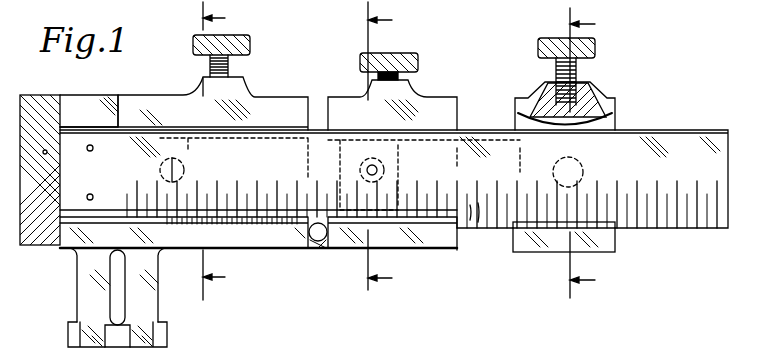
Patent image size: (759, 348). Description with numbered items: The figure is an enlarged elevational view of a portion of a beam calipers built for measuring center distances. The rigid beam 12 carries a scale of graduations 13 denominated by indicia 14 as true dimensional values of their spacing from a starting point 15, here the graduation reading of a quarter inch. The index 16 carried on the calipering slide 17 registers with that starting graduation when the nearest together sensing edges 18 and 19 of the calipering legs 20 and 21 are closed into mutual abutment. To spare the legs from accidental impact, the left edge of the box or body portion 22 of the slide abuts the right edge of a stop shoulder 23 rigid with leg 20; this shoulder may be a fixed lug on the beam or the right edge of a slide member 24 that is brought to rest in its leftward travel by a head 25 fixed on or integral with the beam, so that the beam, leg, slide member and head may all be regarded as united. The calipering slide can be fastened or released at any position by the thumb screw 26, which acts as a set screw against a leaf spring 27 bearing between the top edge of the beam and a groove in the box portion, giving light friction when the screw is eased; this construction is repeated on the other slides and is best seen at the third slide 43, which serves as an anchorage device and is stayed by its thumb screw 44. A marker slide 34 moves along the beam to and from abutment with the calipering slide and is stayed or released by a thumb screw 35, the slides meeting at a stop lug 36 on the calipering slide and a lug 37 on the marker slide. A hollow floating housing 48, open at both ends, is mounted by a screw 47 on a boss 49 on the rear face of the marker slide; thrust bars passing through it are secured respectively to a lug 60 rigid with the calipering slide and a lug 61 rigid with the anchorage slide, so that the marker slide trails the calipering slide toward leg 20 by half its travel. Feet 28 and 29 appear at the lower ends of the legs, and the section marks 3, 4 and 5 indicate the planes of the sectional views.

The beam 12 is at (672, 140).
The scale of graduations 13 is at (478, 226).
The indicia 14 is at (310, 160).
The starting point 15 is at (176, 160).
The index 16 is at (175, 249).
The calipering slide 17 is at (280, 255).
The sensing edge 18 is at (105, 328).
The sensing edge 19 is at (128, 328).
The calipering leg 20 is at (75, 288).
The calipering leg 21 is at (160, 288).
The box or body portion 22 is at (245, 262).
The stop shoulder 23 is at (104, 204).
The slide member 24 is at (89, 111).
The head 25 is at (38, 247).
The thumb screw 26 is at (250, 47).
The leaf spring 27 is at (615, 124).
The foot 28 is at (67, 338).
The foot 29 is at (168, 338).
The marker slide 34 is at (392, 165).
The thumb screw 35 is at (418, 63).
The stop lug 36 is at (312, 241).
The lug 37 is at (322, 244).
The third slide 43 is at (614, 243).
The thumb screw 44 is at (595, 48).
The screw 47 is at (382, 166).
The hollow floating frame or housing 48 is at (488, 142).
The boss 49 is at (400, 160).
The lug 60 is at (160, 170).
The lug 61 is at (575, 160).
The section line 3- 3 is at (221, 151).
The section line 4- 4 is at (387, 149).
The section line 5- 5 is at (590, 153).